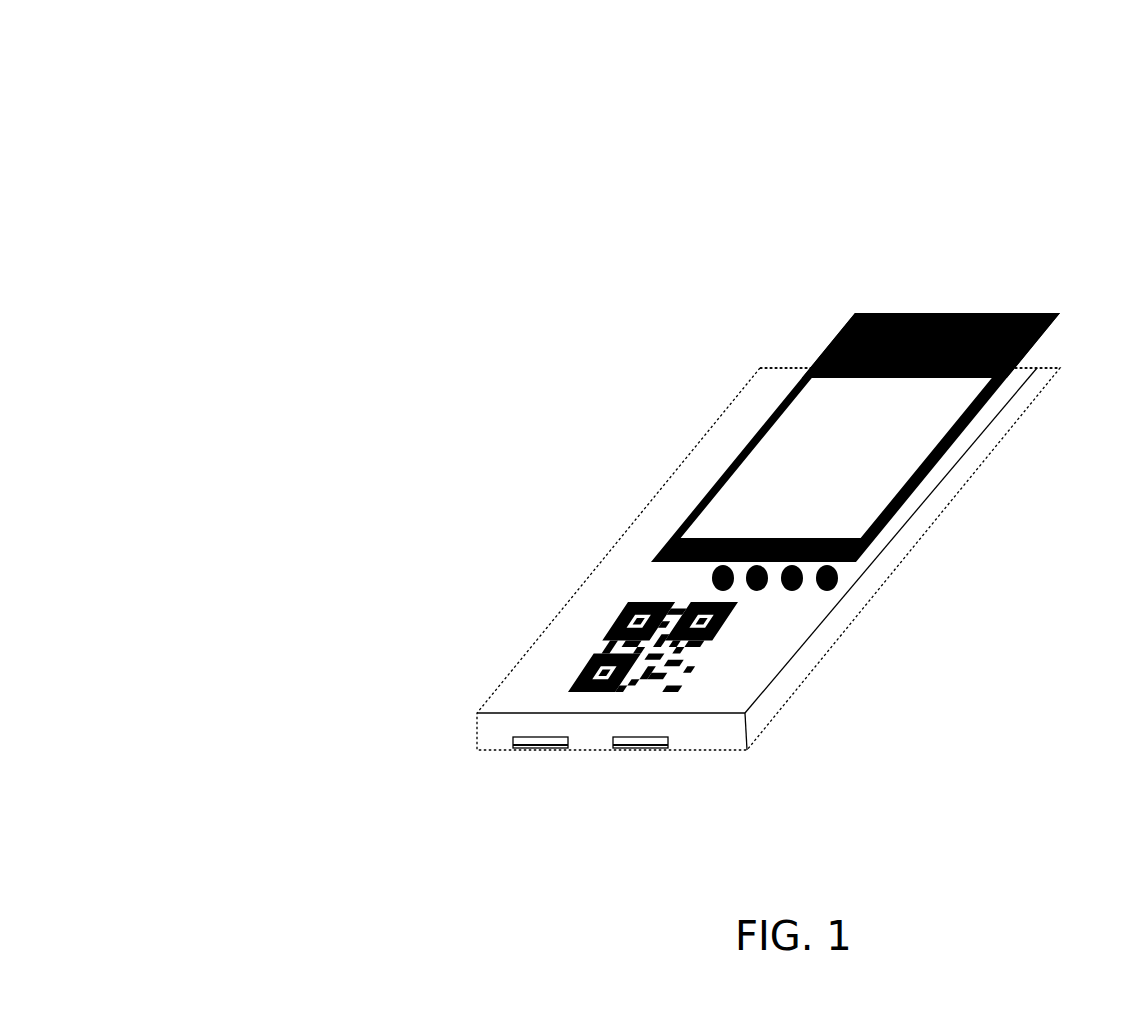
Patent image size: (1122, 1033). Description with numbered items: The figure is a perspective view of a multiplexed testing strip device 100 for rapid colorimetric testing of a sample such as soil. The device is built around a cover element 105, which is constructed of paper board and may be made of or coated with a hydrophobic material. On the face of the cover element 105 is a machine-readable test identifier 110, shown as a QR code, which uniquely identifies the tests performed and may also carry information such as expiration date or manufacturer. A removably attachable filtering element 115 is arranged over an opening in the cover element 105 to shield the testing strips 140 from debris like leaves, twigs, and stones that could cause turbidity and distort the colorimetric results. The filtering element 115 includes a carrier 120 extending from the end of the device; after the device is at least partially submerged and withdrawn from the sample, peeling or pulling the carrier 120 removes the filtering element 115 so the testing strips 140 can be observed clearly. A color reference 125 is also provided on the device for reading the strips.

The multiplexed testing strip device 100 is at (204, 60).
The cover element 105 is at (622, 530).
The machine-readable test identifier 110 is at (700, 660).
The removably attachable filtering element 115 is at (897, 446).
The carrier 120 is at (823, 352).
The color reference 125 is at (830, 588).
The testing strips 140 is at (625, 750).